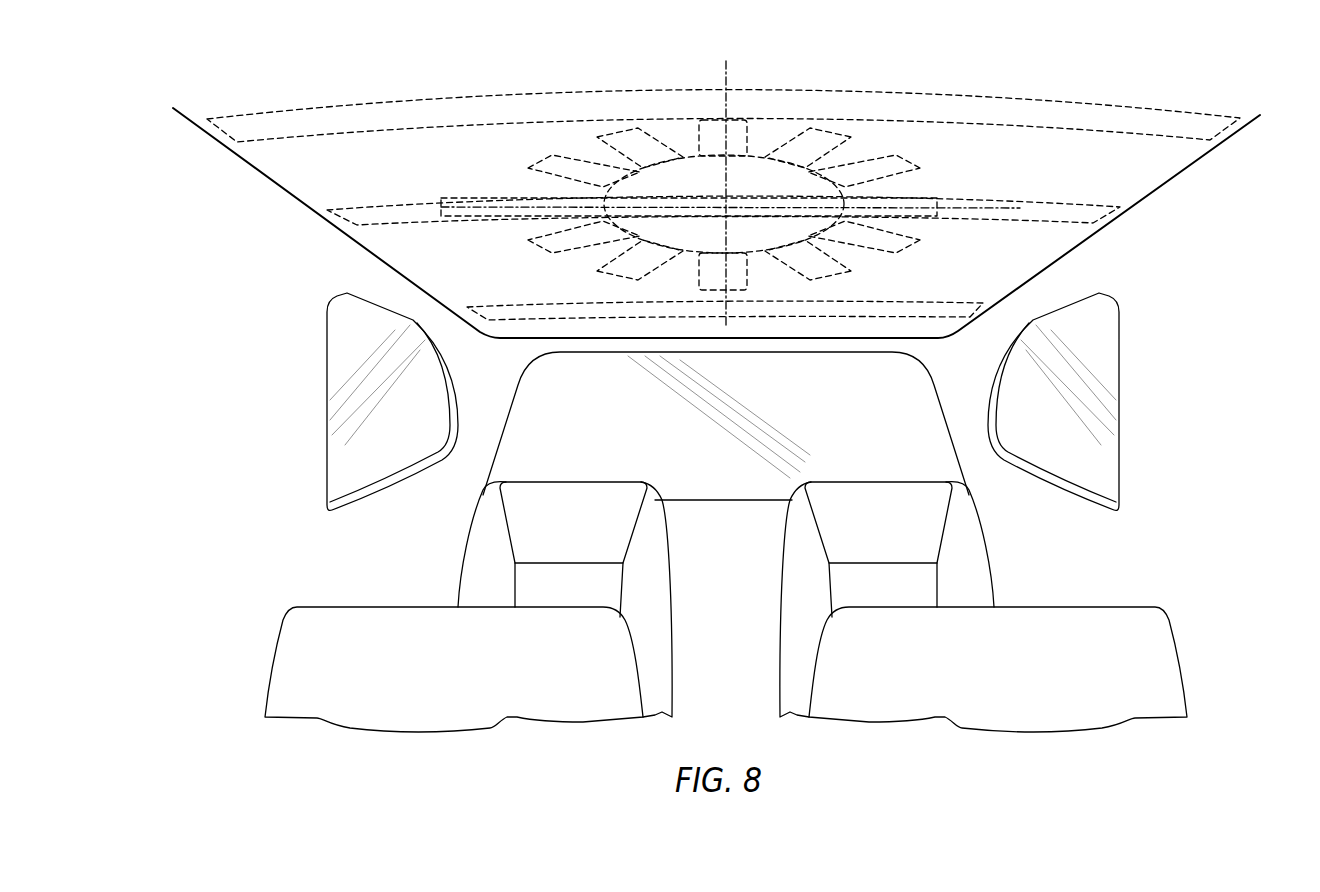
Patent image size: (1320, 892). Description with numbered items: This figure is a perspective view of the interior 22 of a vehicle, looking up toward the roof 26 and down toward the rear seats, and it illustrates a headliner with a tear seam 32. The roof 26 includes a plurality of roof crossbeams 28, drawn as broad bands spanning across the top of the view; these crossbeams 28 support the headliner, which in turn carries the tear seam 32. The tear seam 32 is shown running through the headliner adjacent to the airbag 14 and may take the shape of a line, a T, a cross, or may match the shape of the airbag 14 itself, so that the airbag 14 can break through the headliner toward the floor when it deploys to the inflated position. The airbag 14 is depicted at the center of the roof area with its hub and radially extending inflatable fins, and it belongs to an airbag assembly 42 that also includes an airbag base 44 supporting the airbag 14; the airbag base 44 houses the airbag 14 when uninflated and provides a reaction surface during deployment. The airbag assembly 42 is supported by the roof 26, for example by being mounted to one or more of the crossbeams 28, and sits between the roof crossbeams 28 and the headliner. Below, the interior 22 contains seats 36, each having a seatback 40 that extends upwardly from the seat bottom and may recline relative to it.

The airbag 14 is at (850, 154).
The interior 22 is at (321, 392).
The roof 26 is at (280, 186).
The roof crossbeams 28 is at (335, 105).
The tear seam 32 is at (723, 78).
The seats 36 is at (775, 599).
The seatback 40 is at (670, 570).
The airbag assembly 42 is at (654, 248).
The airbag base 44 is at (600, 157).